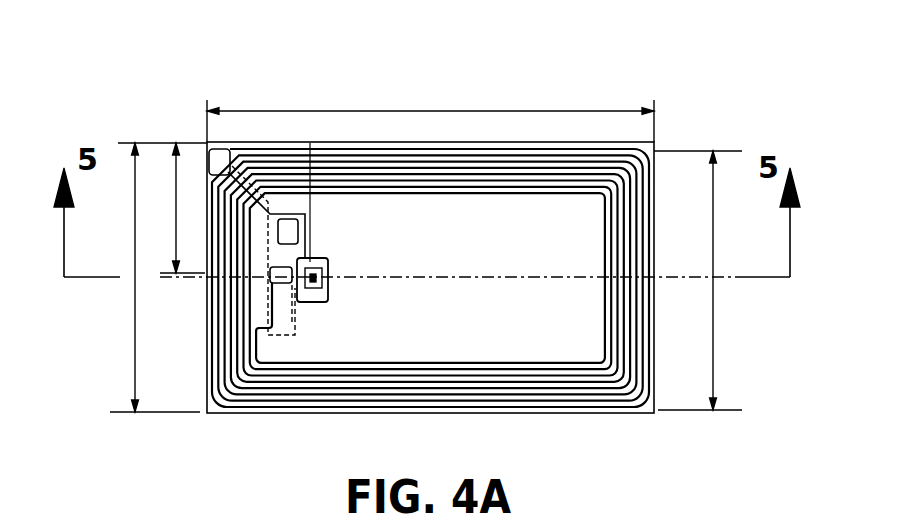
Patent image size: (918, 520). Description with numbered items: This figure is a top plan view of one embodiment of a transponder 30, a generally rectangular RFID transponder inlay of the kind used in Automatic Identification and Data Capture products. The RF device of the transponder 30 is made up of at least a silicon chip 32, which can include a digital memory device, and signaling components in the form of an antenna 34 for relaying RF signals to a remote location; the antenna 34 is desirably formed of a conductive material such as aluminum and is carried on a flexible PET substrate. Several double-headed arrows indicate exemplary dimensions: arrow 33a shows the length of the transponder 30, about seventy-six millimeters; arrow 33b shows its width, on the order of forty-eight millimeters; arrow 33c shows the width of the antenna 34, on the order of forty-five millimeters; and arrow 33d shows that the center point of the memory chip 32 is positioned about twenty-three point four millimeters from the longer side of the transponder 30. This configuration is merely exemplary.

The transponder 30 is at (704, 82).
The silicon chip 32 is at (323, 260).
The double-headed arrow 33a is at (399, 111).
The double-headed arrow 33b is at (133, 342).
The double-headed arrow 33c is at (717, 338).
The double-headed arrow 33d is at (176, 195).
The antenna 34 is at (600, 404).